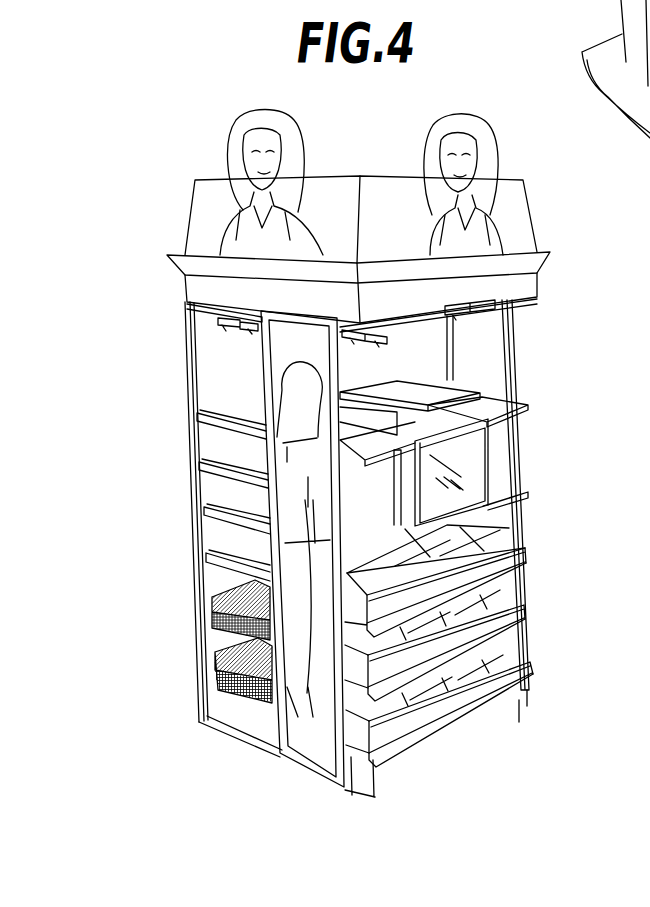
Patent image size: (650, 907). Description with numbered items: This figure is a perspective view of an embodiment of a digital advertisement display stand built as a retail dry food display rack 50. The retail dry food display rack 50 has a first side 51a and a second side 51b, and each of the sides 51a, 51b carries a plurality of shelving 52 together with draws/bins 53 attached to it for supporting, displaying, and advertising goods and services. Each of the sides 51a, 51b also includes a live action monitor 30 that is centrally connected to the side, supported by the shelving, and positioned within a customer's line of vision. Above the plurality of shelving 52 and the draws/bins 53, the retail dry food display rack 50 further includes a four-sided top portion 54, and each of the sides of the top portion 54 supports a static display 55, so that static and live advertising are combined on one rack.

The retail dry food display rack 50 is at (160, 187).
The four-sided top portion 54 is at (556, 283).
The static display 55 is at (197, 218).
The first side 51a is at (540, 523).
The second side 51b is at (170, 503).
The shelving 52 is at (527, 407).
The live action monitor 30 is at (490, 458).
The draws/bins 53 is at (527, 645).